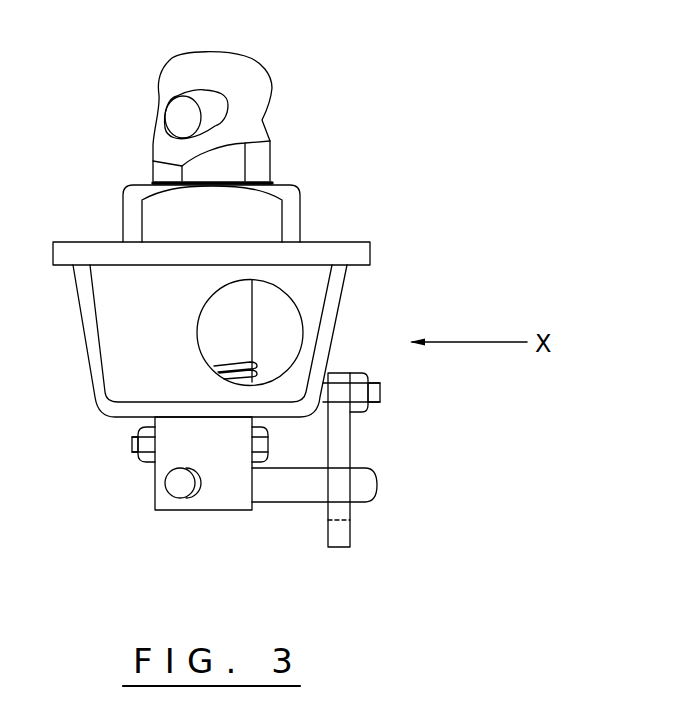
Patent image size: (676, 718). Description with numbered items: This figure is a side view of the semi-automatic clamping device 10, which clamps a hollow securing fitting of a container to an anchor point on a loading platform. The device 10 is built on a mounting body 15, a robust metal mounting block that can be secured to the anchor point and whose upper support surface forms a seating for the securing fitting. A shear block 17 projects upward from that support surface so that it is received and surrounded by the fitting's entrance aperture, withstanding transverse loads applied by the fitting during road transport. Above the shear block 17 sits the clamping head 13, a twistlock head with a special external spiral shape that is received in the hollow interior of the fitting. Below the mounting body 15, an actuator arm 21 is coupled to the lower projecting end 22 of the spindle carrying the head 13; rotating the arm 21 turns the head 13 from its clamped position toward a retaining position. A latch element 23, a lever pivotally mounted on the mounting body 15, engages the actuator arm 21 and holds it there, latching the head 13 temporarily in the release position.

The semi-automatic clamping device 10 is at (382, 201).
The clamping head 13 is at (252, 88).
The mounting body 15 is at (372, 248).
The shear block 17 is at (293, 200).
The actuator arm 21 is at (368, 480).
The lower projecting end 22 is at (188, 450).
The latch element 23 is at (343, 440).